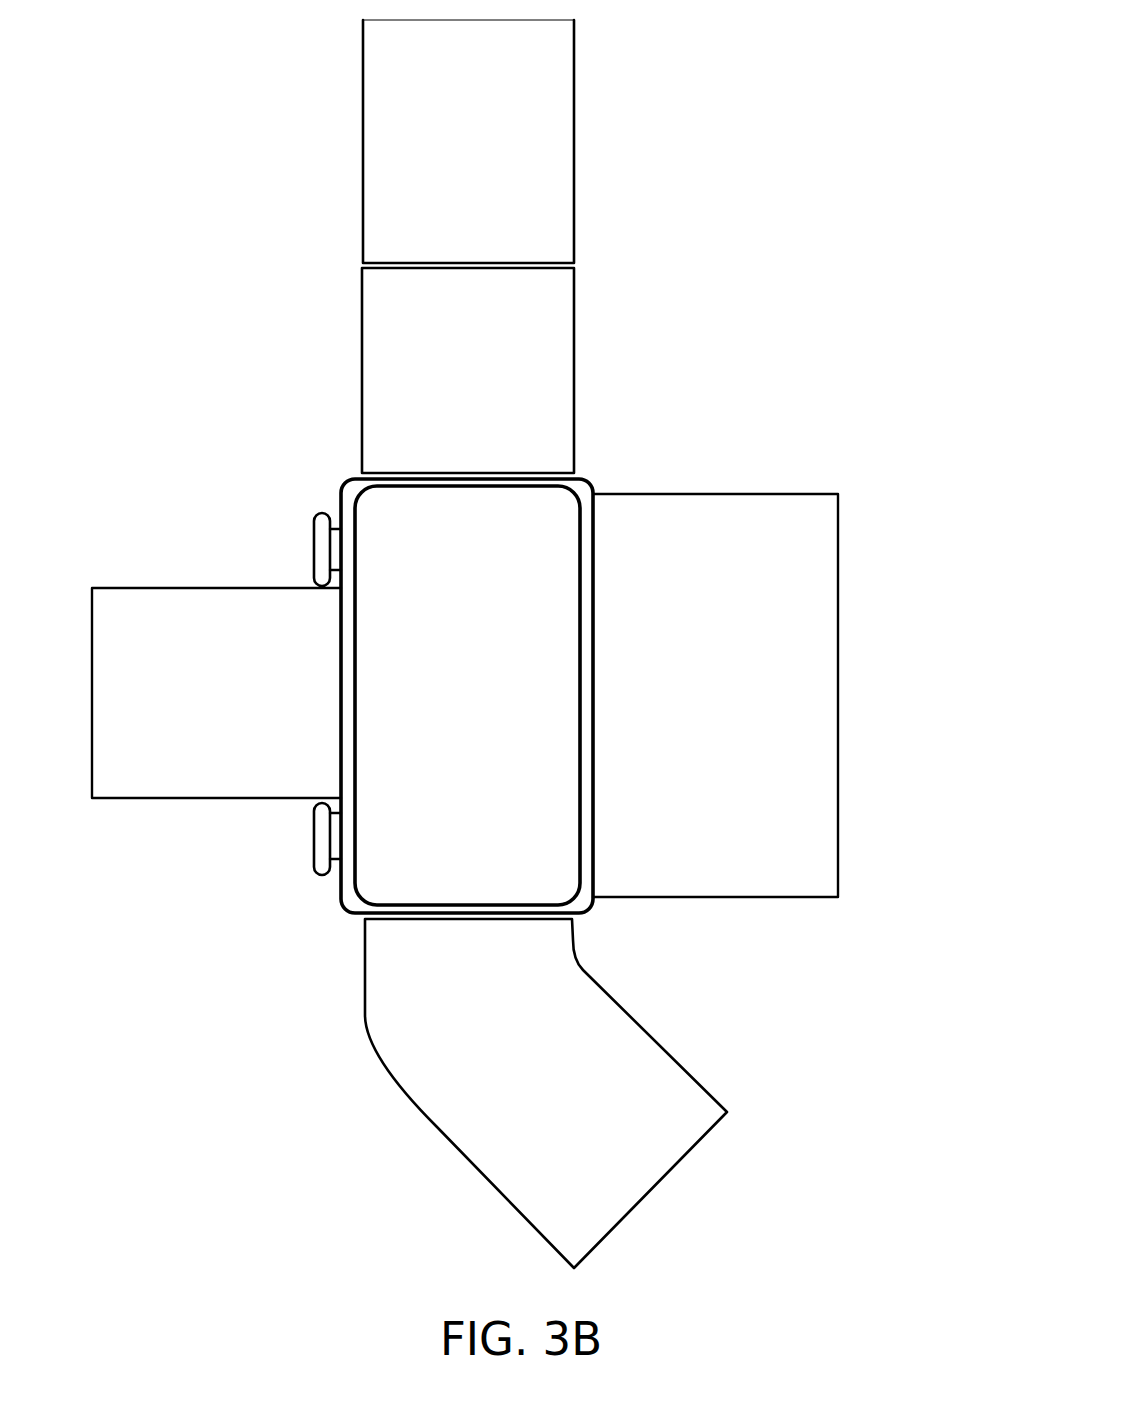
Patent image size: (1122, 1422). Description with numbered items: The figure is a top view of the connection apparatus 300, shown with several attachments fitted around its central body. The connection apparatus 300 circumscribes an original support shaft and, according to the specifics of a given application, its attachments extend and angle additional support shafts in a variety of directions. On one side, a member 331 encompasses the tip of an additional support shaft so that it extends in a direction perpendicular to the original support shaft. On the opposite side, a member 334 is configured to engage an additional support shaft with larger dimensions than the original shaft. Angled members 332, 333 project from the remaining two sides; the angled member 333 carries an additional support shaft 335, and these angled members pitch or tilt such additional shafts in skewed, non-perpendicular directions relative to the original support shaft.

The connection apparatus 300 is at (326, 472).
The member 331 is at (128, 605).
The angled member 332 is at (655, 1158).
The angled member 333 is at (547, 360).
The member 334 is at (810, 659).
The additional support shaft 335 is at (465, 154).